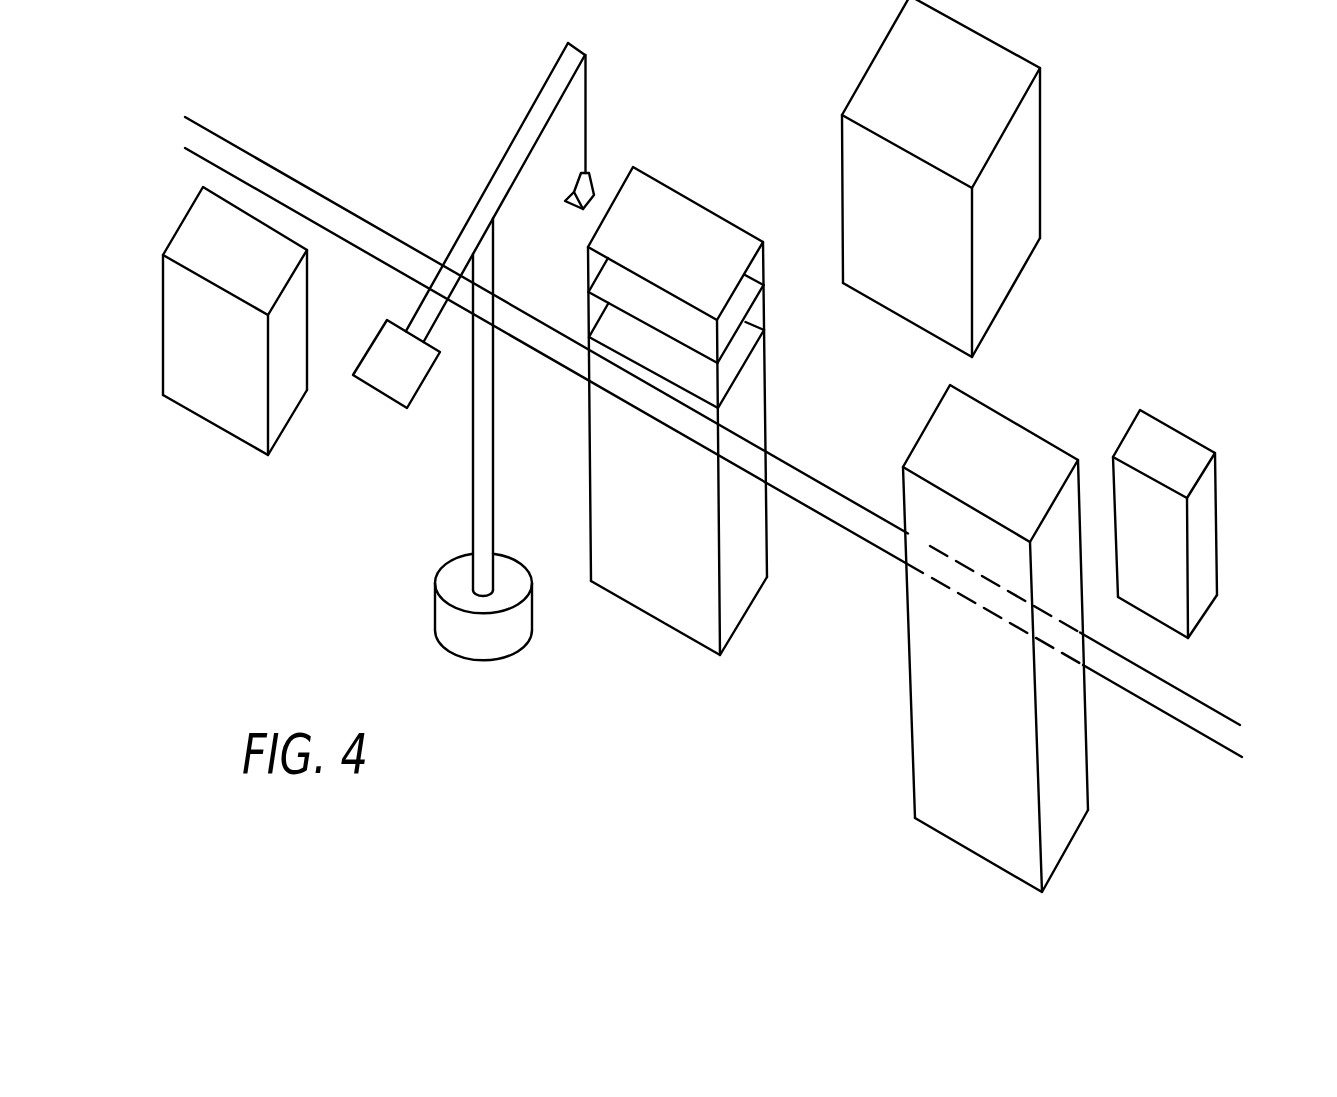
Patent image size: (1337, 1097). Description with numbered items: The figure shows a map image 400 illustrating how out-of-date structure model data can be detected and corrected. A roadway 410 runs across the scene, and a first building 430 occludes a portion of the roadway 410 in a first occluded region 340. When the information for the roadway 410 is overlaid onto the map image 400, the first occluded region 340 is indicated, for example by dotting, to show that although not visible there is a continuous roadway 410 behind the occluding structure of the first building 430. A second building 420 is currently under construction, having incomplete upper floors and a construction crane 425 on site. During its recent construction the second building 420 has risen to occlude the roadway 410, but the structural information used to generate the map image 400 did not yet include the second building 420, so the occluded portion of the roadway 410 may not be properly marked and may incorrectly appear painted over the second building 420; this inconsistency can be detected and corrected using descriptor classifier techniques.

The map image 400 is at (297, 100).
The roadway 410 is at (1158, 676).
The second building 420 is at (672, 188).
The construction crane 425 is at (438, 575).
The first building 430 is at (1005, 412).
The first occluded region 340 is at (947, 587).